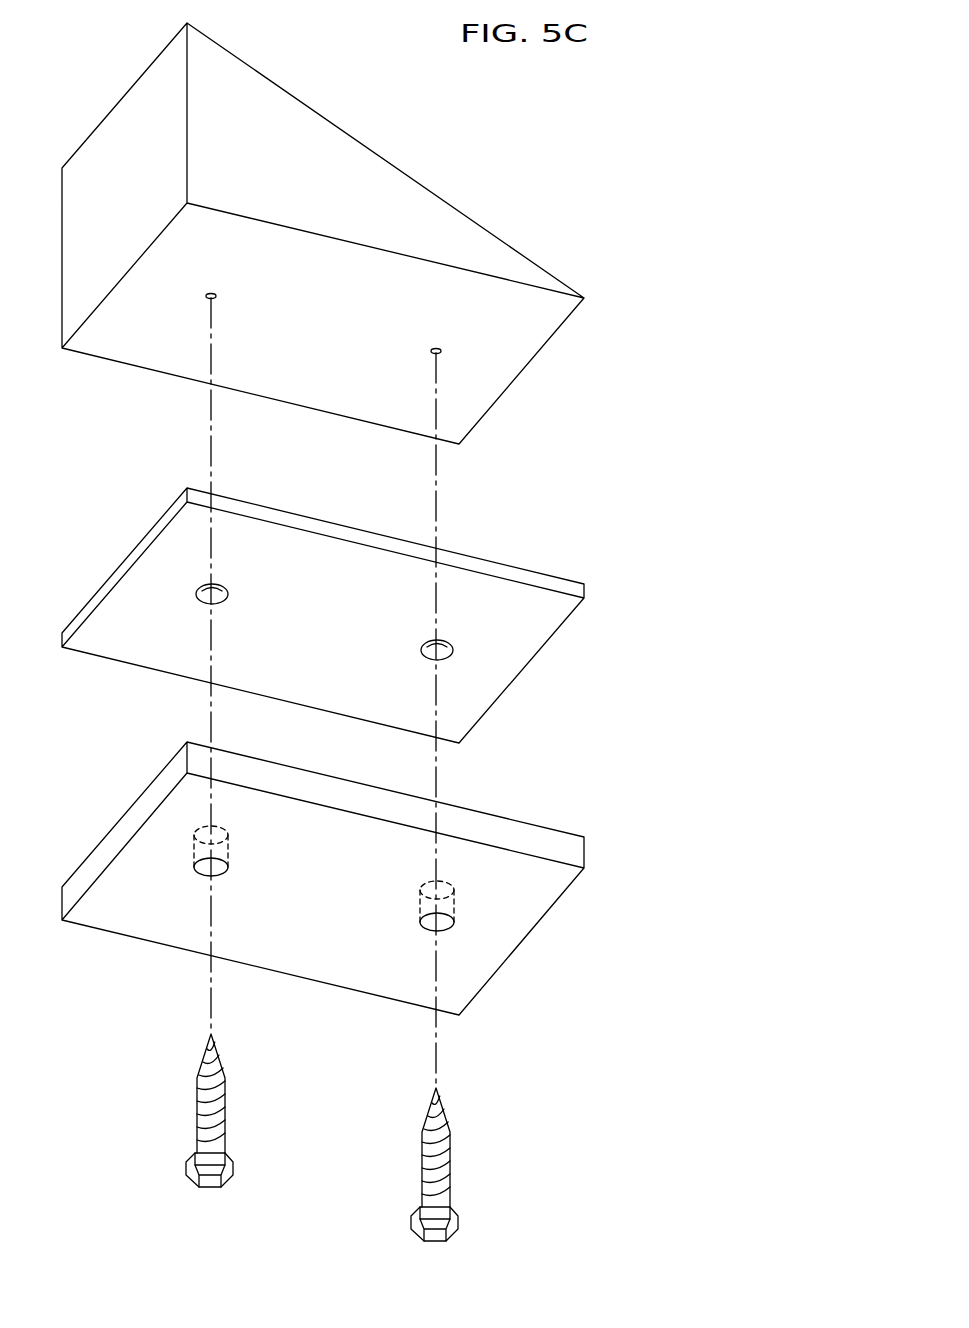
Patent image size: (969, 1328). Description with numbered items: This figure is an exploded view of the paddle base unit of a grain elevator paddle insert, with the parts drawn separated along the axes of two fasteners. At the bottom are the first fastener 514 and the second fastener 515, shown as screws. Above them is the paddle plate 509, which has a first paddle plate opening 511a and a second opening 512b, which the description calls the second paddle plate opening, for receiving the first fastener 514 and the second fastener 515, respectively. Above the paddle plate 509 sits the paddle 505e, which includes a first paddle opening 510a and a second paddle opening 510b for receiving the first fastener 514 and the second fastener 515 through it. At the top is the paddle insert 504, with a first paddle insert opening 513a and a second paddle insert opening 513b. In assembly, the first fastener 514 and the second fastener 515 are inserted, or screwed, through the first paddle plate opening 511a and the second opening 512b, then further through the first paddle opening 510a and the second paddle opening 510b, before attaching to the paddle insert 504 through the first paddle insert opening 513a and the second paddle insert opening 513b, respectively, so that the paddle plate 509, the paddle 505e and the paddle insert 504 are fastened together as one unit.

The paddle insert 504 is at (468, 249).
The first paddle insert opening 513a is at (206, 297).
The second paddle insert opening 513b is at (441, 352).
The paddle 505e is at (512, 612).
The first paddle opening 510a is at (196, 595).
The second paddle opening 510b is at (453, 650).
The paddle plate 509 is at (508, 880).
The first paddle plate opening 511a is at (196, 874).
The hole in base plate 512b is at (444, 930).
The first fastener 514 is at (197, 1110).
The second fastener 515 is at (450, 1172).